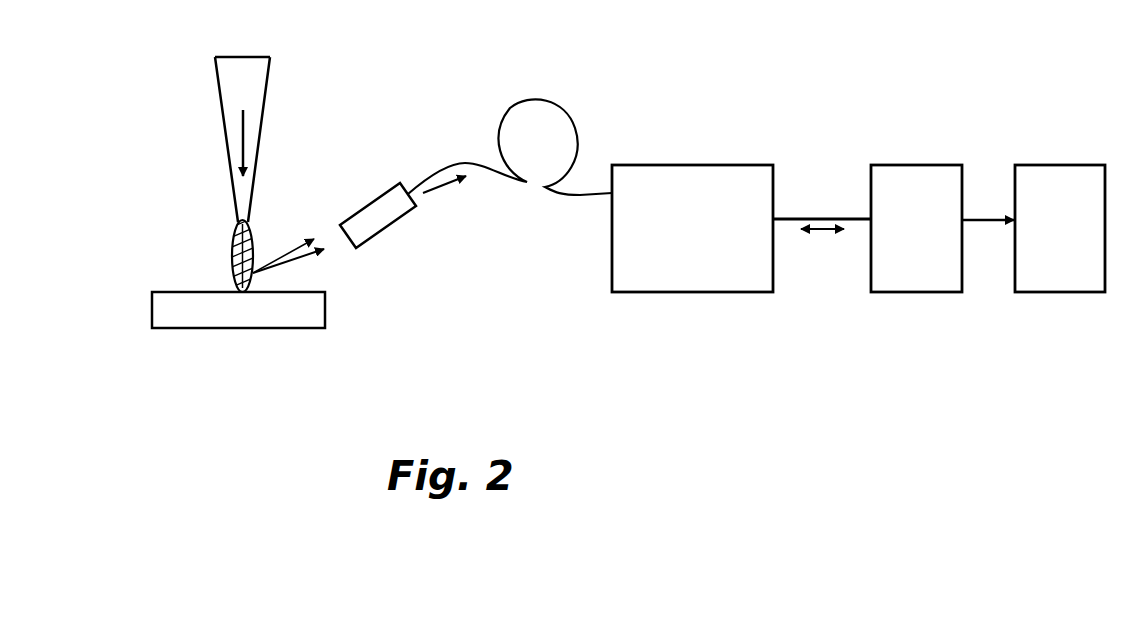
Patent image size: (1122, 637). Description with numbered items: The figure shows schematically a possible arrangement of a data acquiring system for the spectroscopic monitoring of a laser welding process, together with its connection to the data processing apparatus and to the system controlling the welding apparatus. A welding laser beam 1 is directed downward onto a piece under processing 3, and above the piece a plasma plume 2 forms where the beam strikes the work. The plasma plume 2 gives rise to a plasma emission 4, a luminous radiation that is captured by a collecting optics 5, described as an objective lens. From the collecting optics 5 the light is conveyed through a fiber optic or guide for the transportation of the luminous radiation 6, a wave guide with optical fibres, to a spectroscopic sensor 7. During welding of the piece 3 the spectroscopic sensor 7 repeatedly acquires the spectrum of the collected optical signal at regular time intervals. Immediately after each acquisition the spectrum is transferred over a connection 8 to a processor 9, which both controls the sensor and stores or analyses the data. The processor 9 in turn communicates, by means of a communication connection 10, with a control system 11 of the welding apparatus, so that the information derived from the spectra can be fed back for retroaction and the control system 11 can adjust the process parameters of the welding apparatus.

The welding laser beam 1 is at (242, 139).
The plasma plume 2 is at (226, 257).
The piece under processing 3 is at (238, 310).
The plasma emission 4 is at (288, 268).
The collecting optics 5 is at (378, 227).
The fiber optic or guide for the transportation of the luminous radiation 6 is at (510, 147).
The spectroscopic sensor 7 is at (692, 228).
The connection to the processor for controlling the spectroscopic sensor 8 is at (822, 197).
The processor 9 is at (916, 228).
The communication connection 10 is at (988, 196).
The control system of the welding apparatus 11 is at (1060, 228).